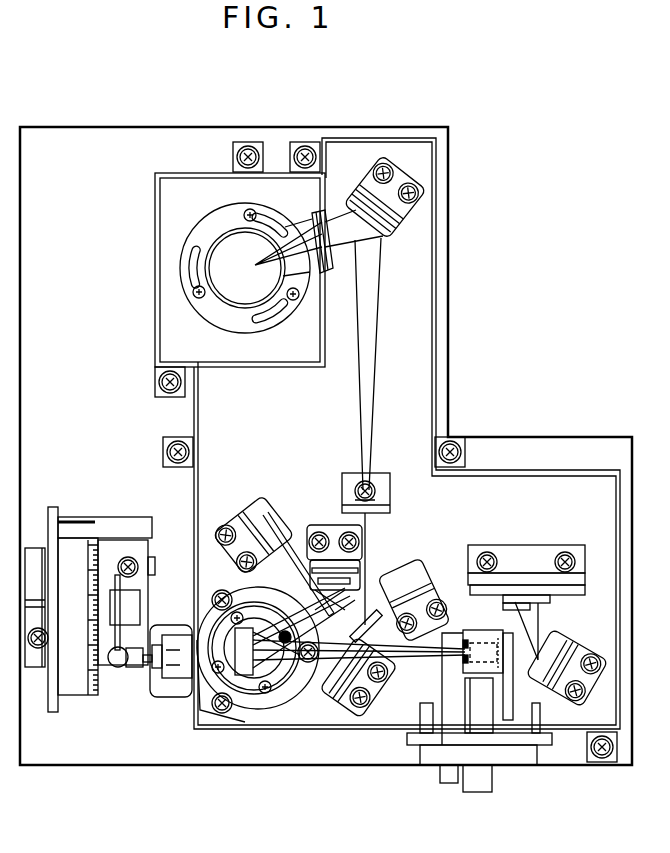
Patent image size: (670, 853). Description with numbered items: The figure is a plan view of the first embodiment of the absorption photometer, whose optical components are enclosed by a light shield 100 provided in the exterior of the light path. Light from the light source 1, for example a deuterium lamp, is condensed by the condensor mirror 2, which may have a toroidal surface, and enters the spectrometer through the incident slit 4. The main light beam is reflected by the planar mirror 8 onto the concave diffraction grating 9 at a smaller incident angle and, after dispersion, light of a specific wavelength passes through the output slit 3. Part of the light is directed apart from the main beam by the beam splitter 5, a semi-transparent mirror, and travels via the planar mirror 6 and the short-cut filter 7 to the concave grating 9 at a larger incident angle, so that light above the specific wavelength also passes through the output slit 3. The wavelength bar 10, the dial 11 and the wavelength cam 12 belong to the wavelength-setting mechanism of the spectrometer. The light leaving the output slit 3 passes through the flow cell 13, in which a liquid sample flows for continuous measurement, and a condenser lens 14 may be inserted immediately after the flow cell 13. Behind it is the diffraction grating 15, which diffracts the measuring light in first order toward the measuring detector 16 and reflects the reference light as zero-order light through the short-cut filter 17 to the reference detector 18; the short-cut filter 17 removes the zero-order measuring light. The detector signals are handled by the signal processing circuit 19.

The light shield 100 is at (383, 140).
The light source 1 is at (225, 250).
The condensor mirror 2 is at (391, 241).
The output slit 3 is at (463, 663).
The incident slit 4 is at (342, 492).
The beam splitter 5 is at (373, 592).
The planar mirror 6 is at (310, 530).
The short-cut filter 7 is at (276, 506).
The planar mirror 8 is at (391, 676).
The concave diffraction grating 9 is at (252, 676).
The wavelength bar 10 is at (147, 668).
The dial 11 is at (76, 683).
The wavelength cam 12 is at (140, 588).
The flow cell 13 is at (477, 665).
The condenser lens 14 is at (513, 668).
The diffraction grating 15 is at (578, 640).
The measuring detector 16 is at (553, 598).
The short-cut filter 17 is at (503, 604).
The reference detector 18 is at (503, 598).
The signal processing circuit 19 is at (580, 592).